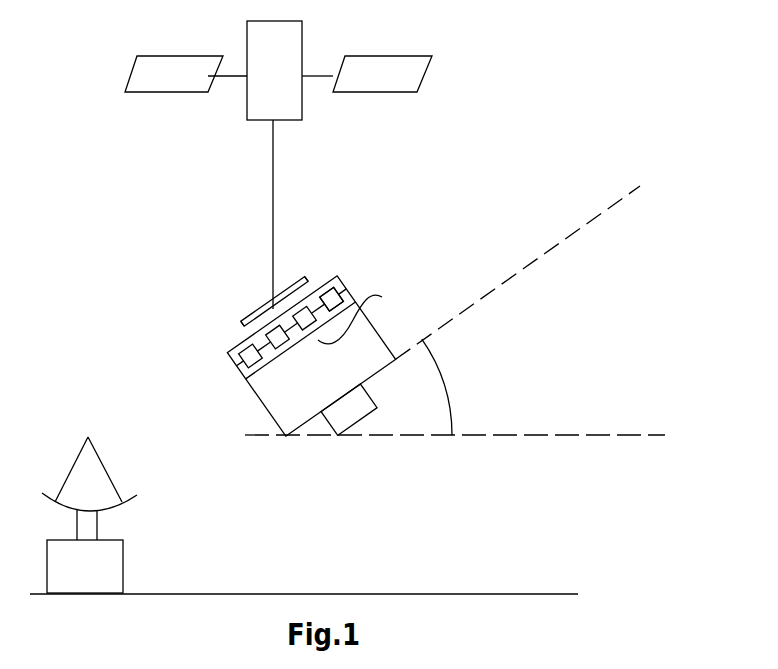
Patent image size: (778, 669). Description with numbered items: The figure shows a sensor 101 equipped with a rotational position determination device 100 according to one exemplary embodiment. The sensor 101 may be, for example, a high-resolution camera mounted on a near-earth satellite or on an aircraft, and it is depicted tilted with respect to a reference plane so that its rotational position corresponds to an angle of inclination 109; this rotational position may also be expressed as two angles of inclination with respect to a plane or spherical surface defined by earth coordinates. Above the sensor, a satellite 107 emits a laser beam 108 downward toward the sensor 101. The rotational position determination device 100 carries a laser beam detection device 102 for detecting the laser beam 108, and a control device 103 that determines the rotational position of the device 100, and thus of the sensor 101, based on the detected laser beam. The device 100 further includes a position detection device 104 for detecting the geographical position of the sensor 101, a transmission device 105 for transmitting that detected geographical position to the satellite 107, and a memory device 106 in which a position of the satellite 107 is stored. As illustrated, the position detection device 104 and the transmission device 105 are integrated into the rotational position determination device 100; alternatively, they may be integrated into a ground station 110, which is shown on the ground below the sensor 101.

The rotational position determination device 100 is at (233, 370).
The sensor 101 is at (379, 340).
The laser beam detection device 102 is at (264, 311).
The control device 103 is at (238, 344).
The position detection device 104 is at (245, 325).
The transmission device 105 is at (298, 287).
The memory device 106 is at (342, 302).
The satellite 107 is at (302, 38).
The laser beam 108 is at (273, 178).
The angle of inclination 109 is at (442, 367).
The ground station 110 is at (123, 557).